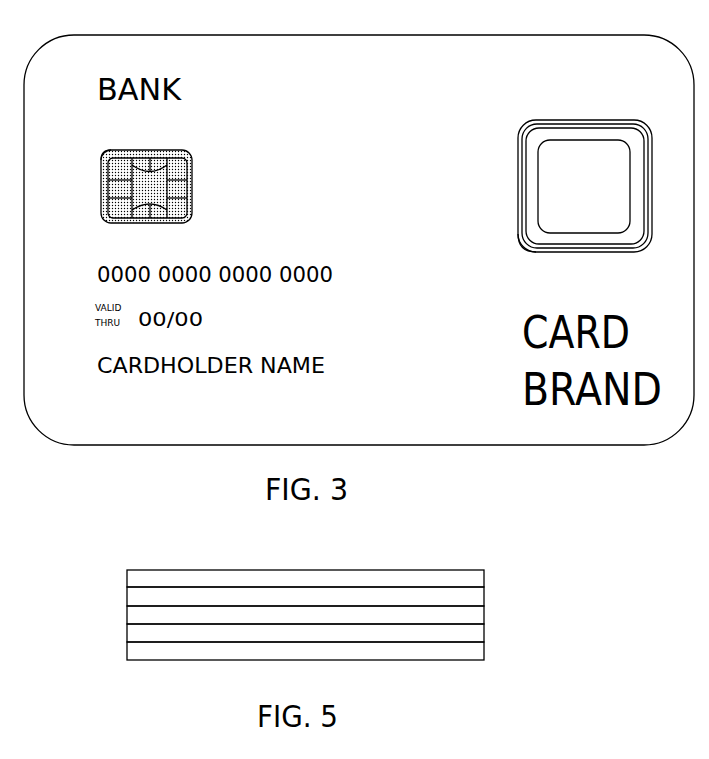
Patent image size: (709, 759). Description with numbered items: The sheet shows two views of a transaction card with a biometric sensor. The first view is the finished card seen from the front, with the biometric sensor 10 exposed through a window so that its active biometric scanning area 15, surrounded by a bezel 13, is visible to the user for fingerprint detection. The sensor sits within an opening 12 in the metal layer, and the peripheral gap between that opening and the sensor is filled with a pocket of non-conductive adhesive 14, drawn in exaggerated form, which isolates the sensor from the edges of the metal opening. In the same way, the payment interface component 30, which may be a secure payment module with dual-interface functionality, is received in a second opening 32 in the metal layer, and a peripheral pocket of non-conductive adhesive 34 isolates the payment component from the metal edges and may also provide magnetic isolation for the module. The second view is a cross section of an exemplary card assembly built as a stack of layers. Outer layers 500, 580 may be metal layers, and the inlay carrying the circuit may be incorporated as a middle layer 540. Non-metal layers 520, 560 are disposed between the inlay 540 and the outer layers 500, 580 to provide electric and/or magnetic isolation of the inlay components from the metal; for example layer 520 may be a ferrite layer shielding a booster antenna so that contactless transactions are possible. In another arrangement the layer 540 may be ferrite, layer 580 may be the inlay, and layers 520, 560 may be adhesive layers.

In FIG. 3, the biometric sensor 10 is at (518, 130).
In FIG. 3, the opening 12 is at (553, 122).
In FIG. 3, the bezel 13 is at (530, 175).
In FIG. 3, the non-conductive adhesive 14 is at (524, 250).
In FIG. 3, the active biometric scanning area 15 is at (584, 186).
In FIG. 3, the payment interface component 30 is at (190, 165).
In FIG. 3, the opening 32 is at (195, 205).
In FIG. 3, the non-conductive adhesive 34 is at (155, 153).
In FIG. 5, the outer layer 500 is at (485, 577).
In FIG. 5, the non-metal layer 520 is at (485, 596).
In FIG. 5, the middle layer 540 is at (480, 615).
In FIG. 5, the non-metal layer 560 is at (476, 636).
In FIG. 5, the outer layer 580 is at (485, 656).